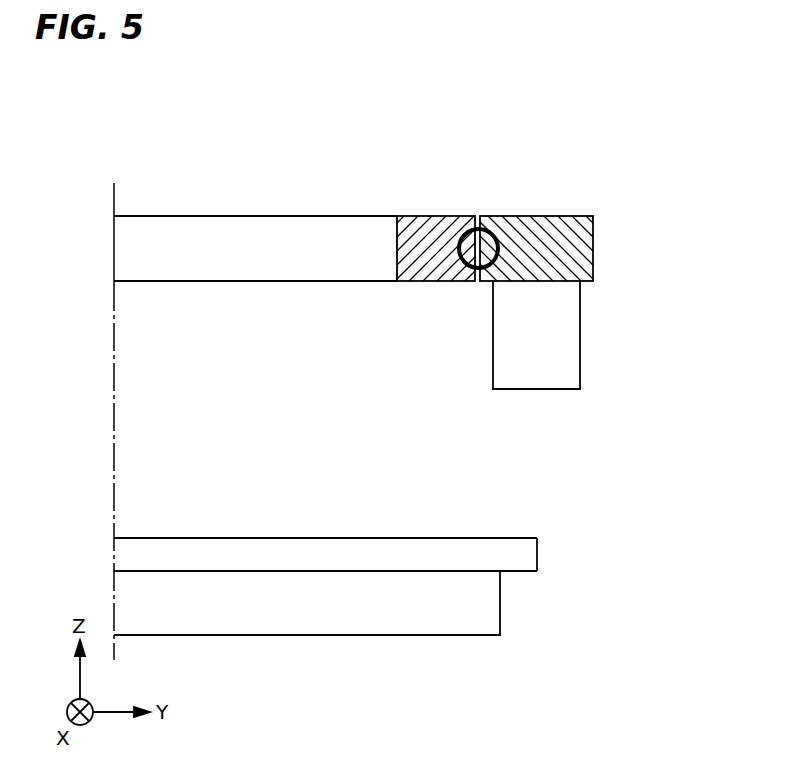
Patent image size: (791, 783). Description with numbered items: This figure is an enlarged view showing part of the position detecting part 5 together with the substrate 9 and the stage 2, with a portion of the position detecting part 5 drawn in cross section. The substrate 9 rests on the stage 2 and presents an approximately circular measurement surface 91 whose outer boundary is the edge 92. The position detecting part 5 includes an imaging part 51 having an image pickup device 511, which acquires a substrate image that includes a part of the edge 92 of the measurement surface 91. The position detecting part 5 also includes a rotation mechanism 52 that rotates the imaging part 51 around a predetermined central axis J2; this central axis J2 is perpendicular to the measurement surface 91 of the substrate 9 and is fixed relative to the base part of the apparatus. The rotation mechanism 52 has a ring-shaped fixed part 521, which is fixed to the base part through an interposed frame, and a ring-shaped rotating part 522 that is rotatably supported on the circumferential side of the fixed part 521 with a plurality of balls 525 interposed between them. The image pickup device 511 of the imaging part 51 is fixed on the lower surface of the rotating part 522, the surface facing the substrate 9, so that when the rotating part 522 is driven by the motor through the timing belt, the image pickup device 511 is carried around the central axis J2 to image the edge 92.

The stage 2 is at (477, 603).
The position detecting part 5 is at (424, 252).
The substrate 9 is at (330, 513).
The imaging part 51 is at (613, 345).
The rotation mechanism 52 is at (495, 187).
The measurement surface 91 is at (305, 537).
The edge 92 is at (537, 537).
The image pickup device 511 is at (547, 335).
The fixed part 521 is at (420, 245).
The rotating part 522 is at (548, 245).
The balls 525 is at (482, 243).
The central axis J2 is at (114, 197).